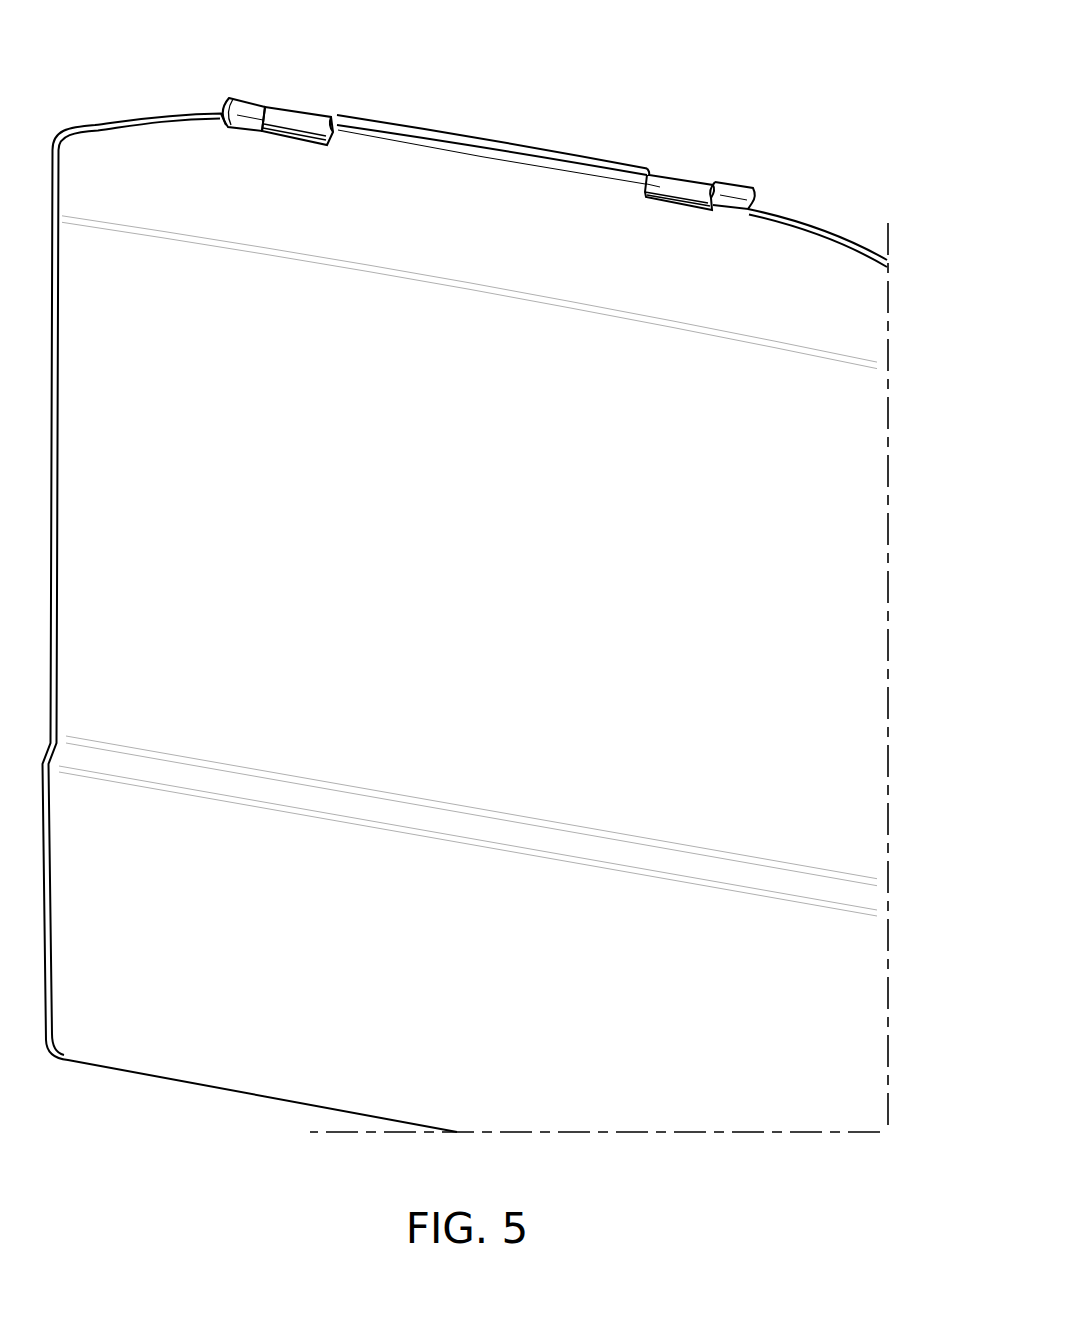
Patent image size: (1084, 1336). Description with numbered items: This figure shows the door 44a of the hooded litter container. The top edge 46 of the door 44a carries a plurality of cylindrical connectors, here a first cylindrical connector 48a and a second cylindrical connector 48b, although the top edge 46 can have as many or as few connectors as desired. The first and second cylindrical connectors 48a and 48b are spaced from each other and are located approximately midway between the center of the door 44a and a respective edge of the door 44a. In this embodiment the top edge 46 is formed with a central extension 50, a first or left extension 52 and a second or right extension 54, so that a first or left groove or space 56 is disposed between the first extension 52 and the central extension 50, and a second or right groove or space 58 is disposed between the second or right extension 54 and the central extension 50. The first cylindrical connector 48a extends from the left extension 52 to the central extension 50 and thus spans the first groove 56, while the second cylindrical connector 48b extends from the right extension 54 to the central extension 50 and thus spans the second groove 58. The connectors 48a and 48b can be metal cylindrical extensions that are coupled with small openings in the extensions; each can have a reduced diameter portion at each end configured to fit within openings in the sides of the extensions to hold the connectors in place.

The door 44a is at (790, 597).
The top edge 46 is at (807, 228).
The first cylindrical connector 48a is at (302, 120).
The second cylindrical connector 48b is at (678, 183).
The central extension 50 is at (482, 139).
The first or left extension 52 is at (253, 96).
The second or right extension 54 is at (737, 183).
The first or left groove or space 56 is at (303, 138).
The second or right groove or space 58 is at (676, 203).